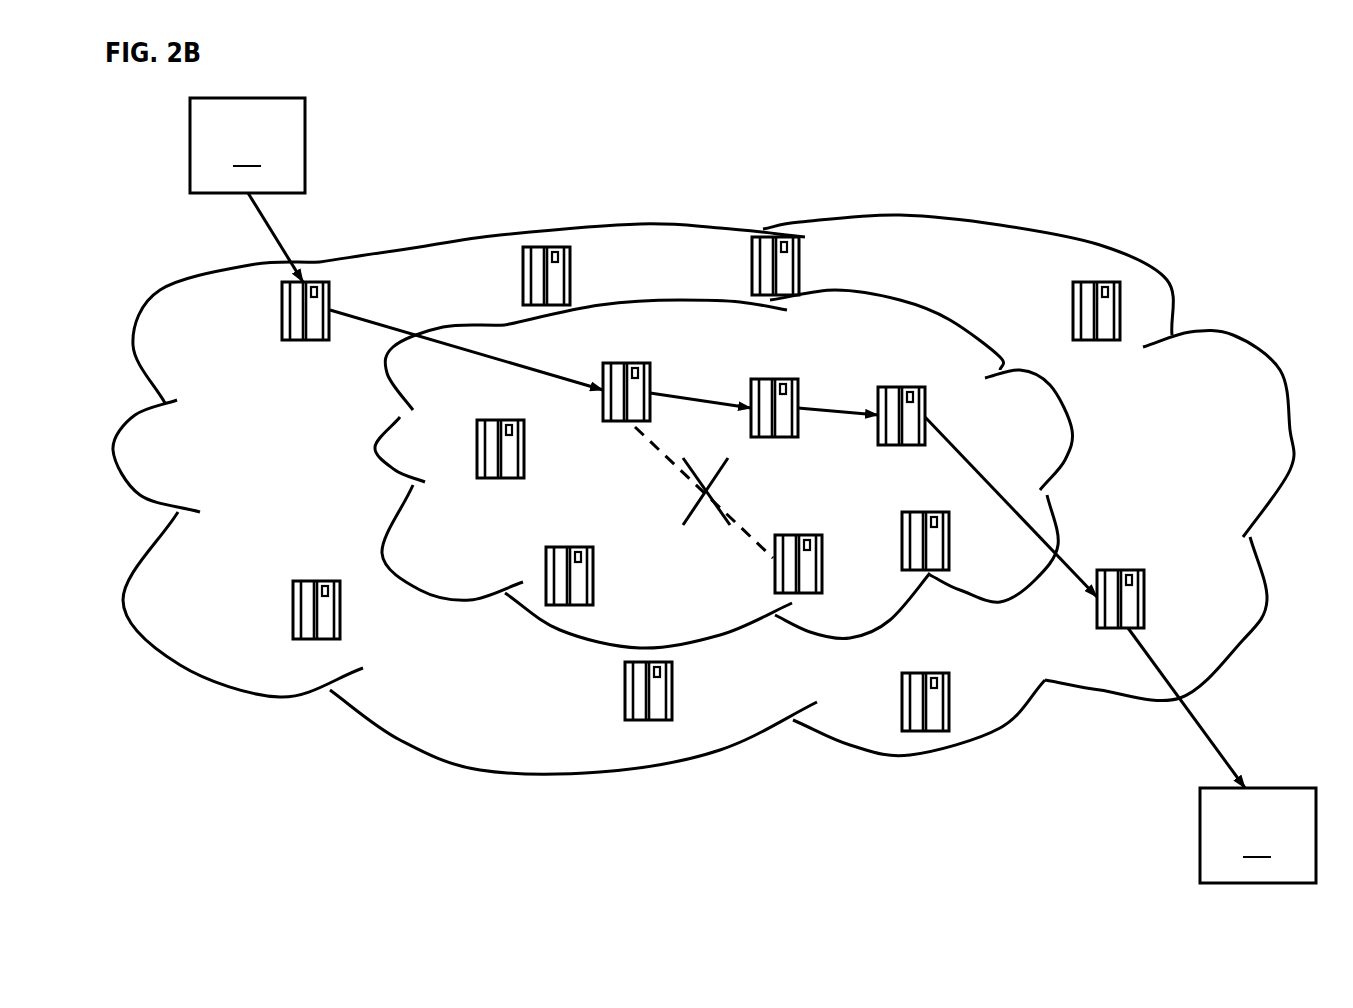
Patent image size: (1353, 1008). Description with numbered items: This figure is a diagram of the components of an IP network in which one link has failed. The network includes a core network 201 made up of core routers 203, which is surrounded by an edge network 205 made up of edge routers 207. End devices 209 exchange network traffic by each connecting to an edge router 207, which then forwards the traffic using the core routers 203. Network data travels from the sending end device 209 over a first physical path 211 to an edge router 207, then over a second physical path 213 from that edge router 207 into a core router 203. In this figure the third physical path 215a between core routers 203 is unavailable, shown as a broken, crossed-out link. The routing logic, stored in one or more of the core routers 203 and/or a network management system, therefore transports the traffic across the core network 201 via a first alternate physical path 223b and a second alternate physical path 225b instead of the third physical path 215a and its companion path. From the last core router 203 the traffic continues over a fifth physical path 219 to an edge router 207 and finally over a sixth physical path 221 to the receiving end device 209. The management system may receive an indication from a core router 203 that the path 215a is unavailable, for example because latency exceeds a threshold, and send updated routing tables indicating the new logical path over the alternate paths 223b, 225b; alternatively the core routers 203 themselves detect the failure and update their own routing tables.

The core network 201 is at (925, 302).
The core router 203 is at (627, 363).
The edge network 205 is at (925, 212).
The edge router 207 is at (282, 310).
The end device 209 is at (753, 490).
The first physical path 211 is at (292, 250).
The second physical path 213 is at (393, 330).
The third physical path 215a is at (740, 515).
The fifth physical path 219 is at (977, 466).
The sixth physical path 221 is at (1218, 740).
The first alternate physical path 223b is at (685, 395).
The second alternate physical path 225b is at (835, 410).